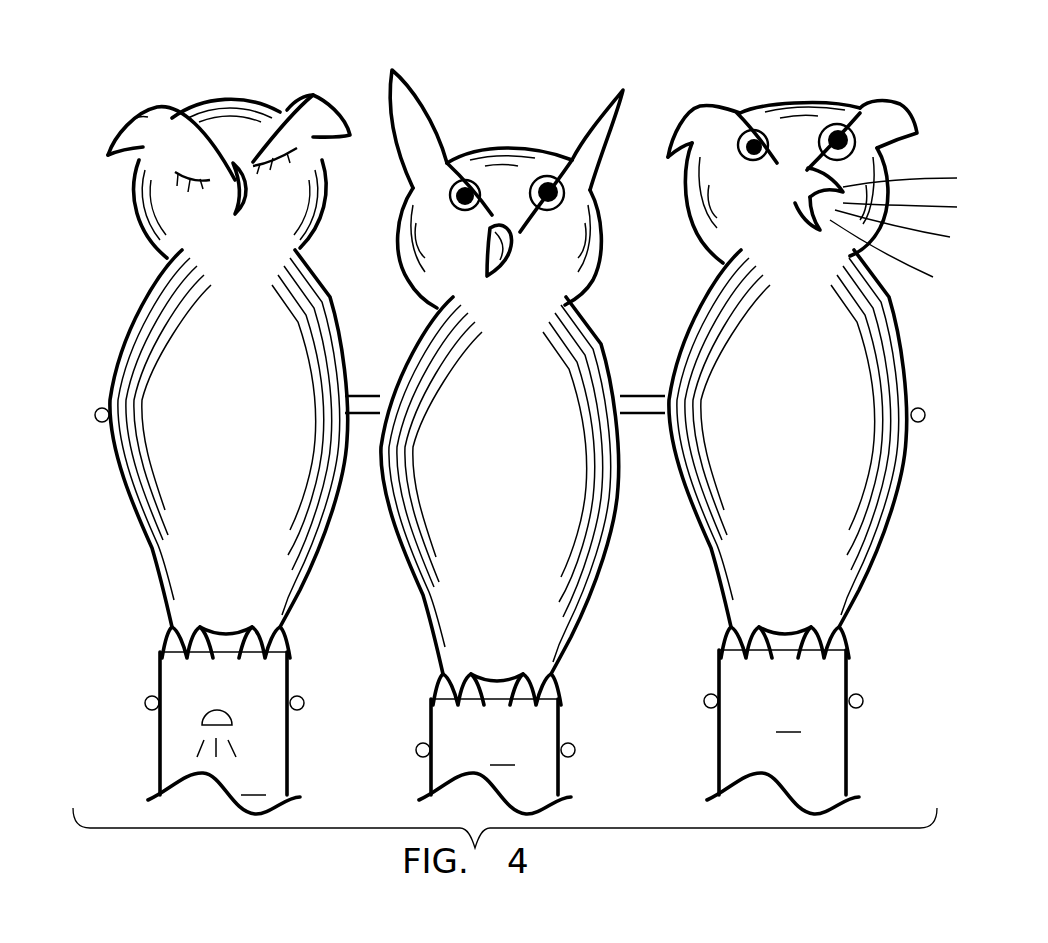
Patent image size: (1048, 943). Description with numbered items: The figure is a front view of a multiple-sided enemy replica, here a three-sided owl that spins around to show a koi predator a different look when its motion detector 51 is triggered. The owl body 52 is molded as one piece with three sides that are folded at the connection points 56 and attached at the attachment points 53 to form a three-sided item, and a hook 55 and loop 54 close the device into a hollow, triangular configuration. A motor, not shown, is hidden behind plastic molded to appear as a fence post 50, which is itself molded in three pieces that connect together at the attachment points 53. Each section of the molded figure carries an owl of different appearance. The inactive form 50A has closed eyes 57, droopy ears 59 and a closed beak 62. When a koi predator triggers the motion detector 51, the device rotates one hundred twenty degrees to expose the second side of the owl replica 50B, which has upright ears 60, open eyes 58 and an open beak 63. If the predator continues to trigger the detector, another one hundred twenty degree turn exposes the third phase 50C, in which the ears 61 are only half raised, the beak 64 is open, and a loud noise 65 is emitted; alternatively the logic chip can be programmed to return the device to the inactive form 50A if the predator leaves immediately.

The fence post 50 is at (503, 732).
The inactive form 50A is at (97, 83).
The second side of the owl replica 50B is at (635, 83).
The third phase 50C is at (920, 83).
The motion detector 51 is at (215, 716).
The owl body 52 is at (145, 505).
The attachment points 53 is at (148, 697).
The loop 54 is at (98, 422).
The hook 55 is at (922, 422).
The connection points 56 is at (372, 405).
The closed eyes 57 is at (190, 195).
The open eyes 58 is at (488, 172).
The droopy ears 59 is at (148, 118).
The upright ears 60 is at (423, 117).
The ears 61 is at (708, 113).
The closed beak 62 is at (244, 194).
The open beak 63 is at (496, 273).
The beak 64 is at (798, 213).
The loud noise 65 is at (930, 177).